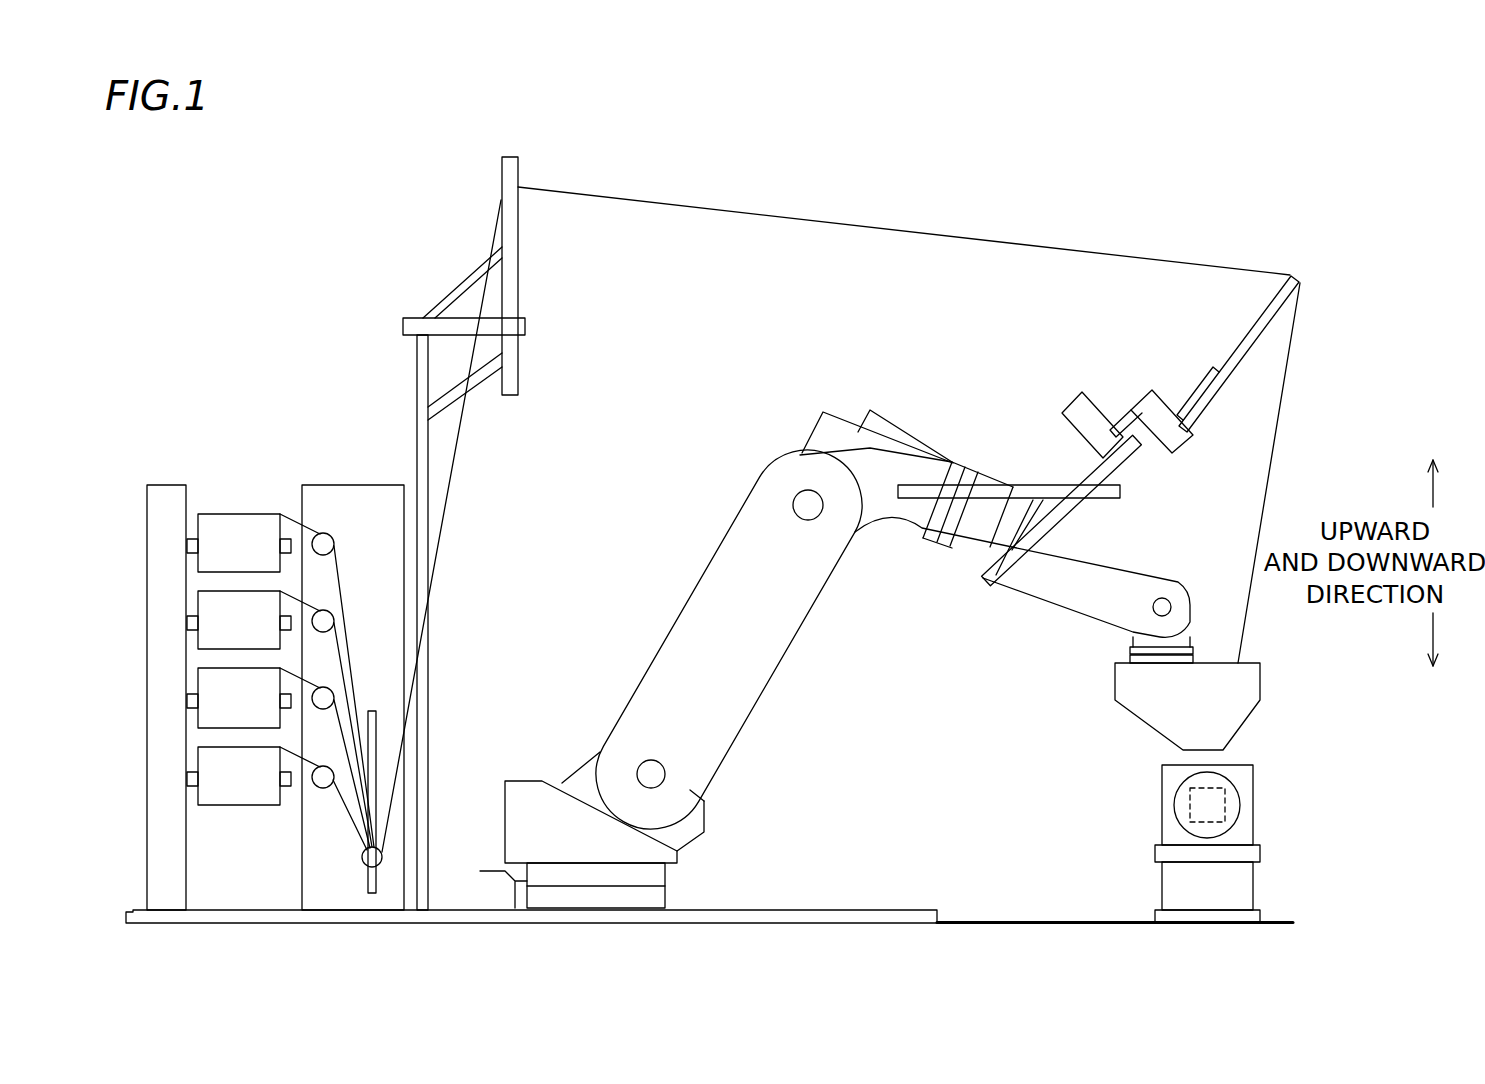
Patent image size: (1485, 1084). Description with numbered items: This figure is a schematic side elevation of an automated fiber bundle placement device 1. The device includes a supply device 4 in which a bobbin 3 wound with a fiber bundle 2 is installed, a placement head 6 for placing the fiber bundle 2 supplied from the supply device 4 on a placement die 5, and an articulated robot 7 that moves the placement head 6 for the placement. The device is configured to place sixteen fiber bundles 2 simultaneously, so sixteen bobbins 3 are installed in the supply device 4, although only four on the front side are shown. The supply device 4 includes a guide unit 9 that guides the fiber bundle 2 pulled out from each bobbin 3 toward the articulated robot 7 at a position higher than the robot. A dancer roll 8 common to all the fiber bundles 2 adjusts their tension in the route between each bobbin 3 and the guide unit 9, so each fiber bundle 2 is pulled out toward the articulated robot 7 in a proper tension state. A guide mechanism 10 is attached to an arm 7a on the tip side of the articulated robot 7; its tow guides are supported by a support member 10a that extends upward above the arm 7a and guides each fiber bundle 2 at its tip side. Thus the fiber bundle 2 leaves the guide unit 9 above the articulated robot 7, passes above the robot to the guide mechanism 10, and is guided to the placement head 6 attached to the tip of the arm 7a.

The automated fiber bundle placement device 1 is at (695, 533).
The fiber bundle 2 is at (902, 232).
The bobbin 3 is at (295, 666).
The supply device 4 is at (207, 557).
The placement die 5 is at (1247, 805).
The placement head 6 is at (1252, 682).
The articulated robot 7 is at (800, 619).
The arm 7a is at (1047, 582).
The dancer roll 8 is at (368, 860).
The guide unit 9 is at (456, 533).
The guide mechanism 10 is at (1277, 315).
The support member 10a is at (1253, 332).